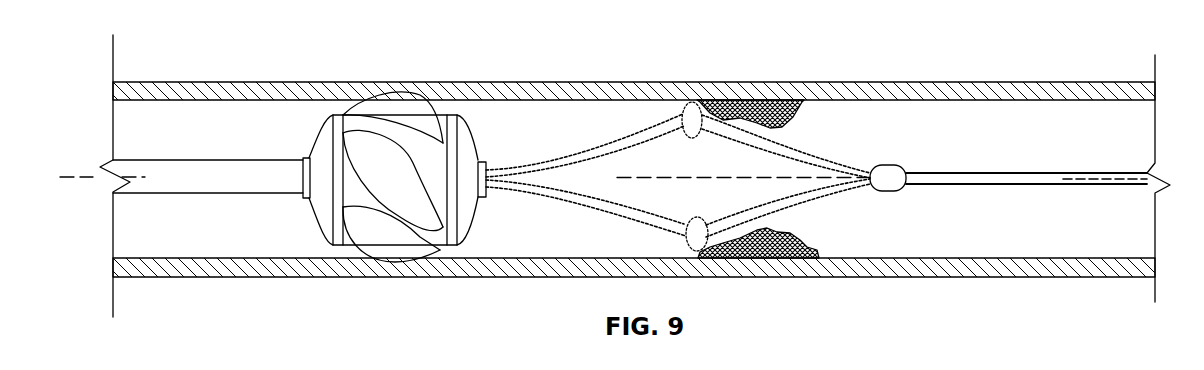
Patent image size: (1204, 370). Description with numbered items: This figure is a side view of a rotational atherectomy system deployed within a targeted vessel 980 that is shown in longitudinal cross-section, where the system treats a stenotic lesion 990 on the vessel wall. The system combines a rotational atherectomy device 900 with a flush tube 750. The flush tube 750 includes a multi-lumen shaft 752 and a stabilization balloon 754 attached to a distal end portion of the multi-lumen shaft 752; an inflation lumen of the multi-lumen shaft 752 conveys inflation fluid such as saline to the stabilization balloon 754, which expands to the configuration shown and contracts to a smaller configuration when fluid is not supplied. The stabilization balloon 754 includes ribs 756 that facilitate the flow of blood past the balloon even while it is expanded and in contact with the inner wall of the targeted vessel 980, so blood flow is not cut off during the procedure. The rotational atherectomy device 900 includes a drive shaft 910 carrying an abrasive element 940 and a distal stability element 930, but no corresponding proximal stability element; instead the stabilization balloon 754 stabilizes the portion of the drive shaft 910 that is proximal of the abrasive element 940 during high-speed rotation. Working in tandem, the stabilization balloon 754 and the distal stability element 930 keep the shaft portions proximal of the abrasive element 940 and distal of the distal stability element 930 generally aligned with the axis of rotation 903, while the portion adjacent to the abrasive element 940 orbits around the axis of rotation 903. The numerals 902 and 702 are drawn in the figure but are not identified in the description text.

The flush tube 750 is at (262, 125).
The multi-lumen shaft 752 is at (282, 193).
The stabilization balloon 754 is at (469, 128).
The ribs 756 is at (440, 135).
The rotational atherectomy device 900 is at (573, 160).
The proximal guidewire segment 902 is at (93, 177).
The axis of rotation 903 is at (647, 180).
The drive shaft 910 is at (967, 183).
The distal stability element 930 is at (893, 165).
The abrasive element 940 is at (683, 114).
The targeted vessel 980 is at (1040, 82).
The stenotic lesion 990 is at (803, 112).
The guidewire 702 is at (1117, 180).